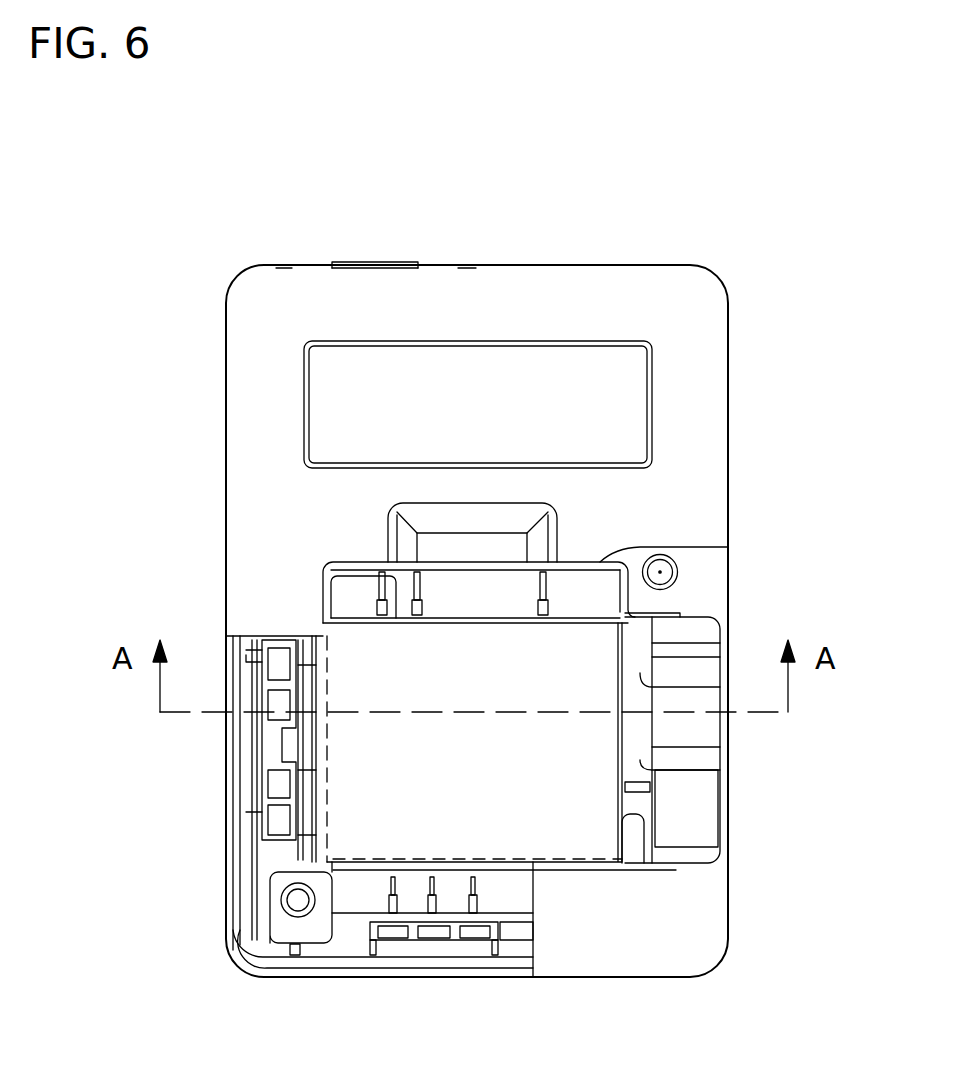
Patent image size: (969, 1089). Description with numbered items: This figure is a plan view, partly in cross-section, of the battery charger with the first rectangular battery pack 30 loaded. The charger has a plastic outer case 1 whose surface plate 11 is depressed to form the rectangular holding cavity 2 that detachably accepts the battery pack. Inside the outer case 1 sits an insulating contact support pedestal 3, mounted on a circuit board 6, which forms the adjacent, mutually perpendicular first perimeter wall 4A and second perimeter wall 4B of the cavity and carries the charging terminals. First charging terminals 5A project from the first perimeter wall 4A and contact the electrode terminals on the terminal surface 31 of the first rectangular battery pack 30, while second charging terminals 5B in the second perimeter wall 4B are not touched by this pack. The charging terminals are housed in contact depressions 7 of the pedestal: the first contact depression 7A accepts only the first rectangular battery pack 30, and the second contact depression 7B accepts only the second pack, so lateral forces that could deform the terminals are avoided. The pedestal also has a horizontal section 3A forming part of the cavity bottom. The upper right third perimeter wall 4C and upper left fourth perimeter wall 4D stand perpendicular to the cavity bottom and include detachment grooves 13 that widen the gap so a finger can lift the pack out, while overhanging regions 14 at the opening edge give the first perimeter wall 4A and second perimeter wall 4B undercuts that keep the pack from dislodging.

The outer case 1 is at (772, 336).
The surface plate 11 is at (668, 493).
The holding cavity 2 is at (590, 585).
The detachment grooves 13 is at (465, 528).
The first rectangular battery pack 30 is at (443, 647).
The fourth perimeter wall 4D is at (555, 627).
The first perimeter wall 4A is at (292, 752).
The first charging terminals 5A is at (300, 688).
The terminal surface 31 is at (313, 762).
The overhanging regions 14 is at (327, 808).
The second perimeter wall 4B is at (466, 880).
The third perimeter wall 4C is at (630, 838).
The horizontal section 3A is at (505, 893).
The contact depressions 7 is at (160, 875).
The first contact depression 7A is at (337, 893).
The second contact depression 7B is at (285, 900).
The contact support pedestal 3 is at (301, 932).
The circuit board 6 is at (317, 935).
The second charging terminals 5B is at (398, 880).